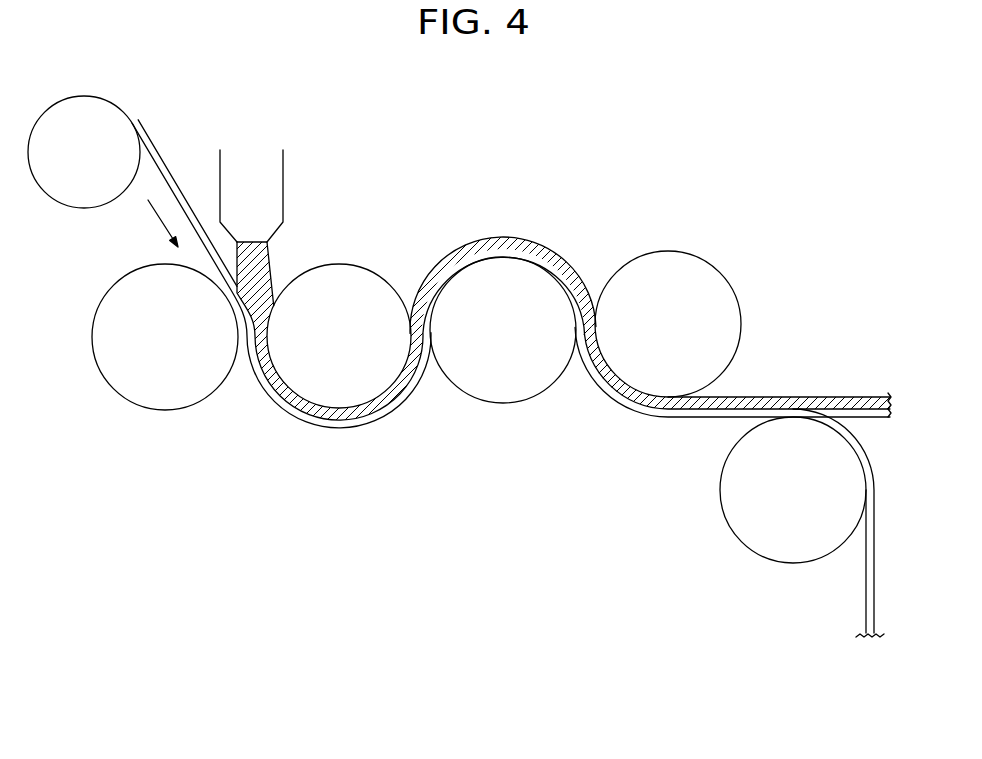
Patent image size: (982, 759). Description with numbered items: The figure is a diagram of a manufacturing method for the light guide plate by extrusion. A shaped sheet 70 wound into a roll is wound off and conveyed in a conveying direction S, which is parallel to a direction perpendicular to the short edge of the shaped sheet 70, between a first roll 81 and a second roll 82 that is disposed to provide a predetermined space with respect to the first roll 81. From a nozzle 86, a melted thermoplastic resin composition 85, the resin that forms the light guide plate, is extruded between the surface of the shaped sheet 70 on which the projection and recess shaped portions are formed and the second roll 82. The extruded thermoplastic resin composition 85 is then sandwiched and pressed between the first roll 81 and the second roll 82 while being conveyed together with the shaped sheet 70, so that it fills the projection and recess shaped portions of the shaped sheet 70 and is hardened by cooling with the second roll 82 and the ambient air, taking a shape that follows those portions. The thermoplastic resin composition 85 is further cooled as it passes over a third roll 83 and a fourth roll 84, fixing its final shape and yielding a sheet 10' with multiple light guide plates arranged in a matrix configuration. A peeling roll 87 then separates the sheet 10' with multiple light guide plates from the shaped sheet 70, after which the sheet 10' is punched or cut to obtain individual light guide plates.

The shaped sheet 70 is at (155, 143).
The conveying direction S is at (155, 223).
The first roll 81 is at (160, 395).
The second roll 82 is at (356, 272).
The third roll 83 is at (493, 388).
The fourth roll 84 is at (664, 278).
The thermoplastic resin composition 85 is at (262, 263).
The nozzle 86 is at (272, 181).
The peeling roll 87 is at (730, 493).
The sheet with multiple light guide plates 10' is at (733, 476).